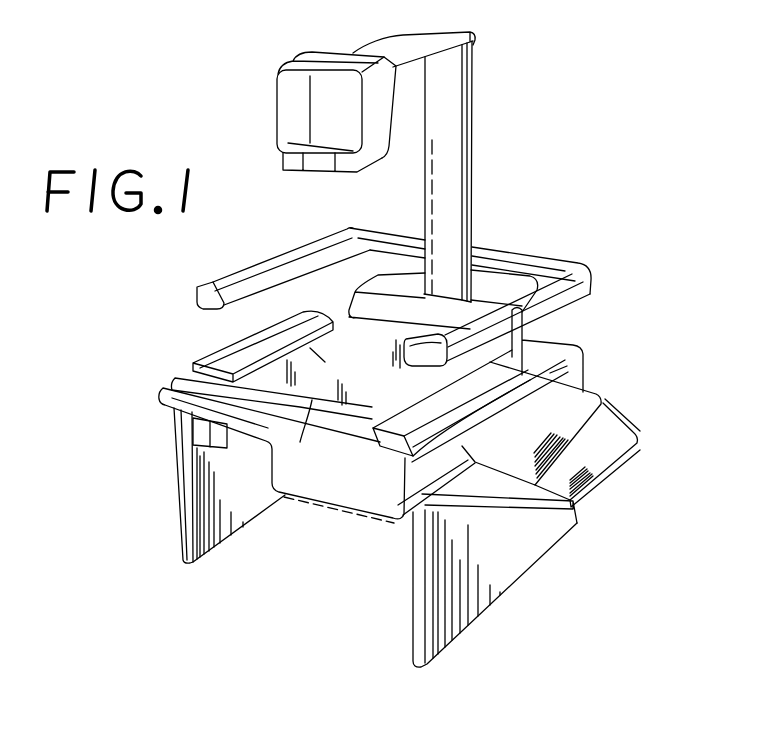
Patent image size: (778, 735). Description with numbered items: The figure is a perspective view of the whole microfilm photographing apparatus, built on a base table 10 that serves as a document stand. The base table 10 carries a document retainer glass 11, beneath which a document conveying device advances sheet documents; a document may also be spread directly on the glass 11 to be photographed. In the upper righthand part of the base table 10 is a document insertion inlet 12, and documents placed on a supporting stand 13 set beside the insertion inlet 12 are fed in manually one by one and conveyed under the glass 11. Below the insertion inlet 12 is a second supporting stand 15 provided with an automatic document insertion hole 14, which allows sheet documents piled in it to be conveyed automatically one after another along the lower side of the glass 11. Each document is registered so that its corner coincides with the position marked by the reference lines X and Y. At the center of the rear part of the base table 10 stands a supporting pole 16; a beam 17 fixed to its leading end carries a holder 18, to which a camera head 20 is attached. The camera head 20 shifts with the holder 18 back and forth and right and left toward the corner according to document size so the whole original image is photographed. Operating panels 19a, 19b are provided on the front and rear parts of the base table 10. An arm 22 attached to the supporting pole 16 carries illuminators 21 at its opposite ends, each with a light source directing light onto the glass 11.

The base table 10 is at (171, 376).
The document retainer glass 11 is at (363, 400).
The document insertion inlet 12 is at (530, 370).
The supporting stand 13 is at (565, 396).
The automatic document insertion hole 14 is at (603, 413).
The supporting stand 15 is at (594, 478).
The supporting pole 16 is at (467, 181).
The beam 17 is at (428, 40).
The holder 18 is at (390, 113).
The operating panel 19a is at (383, 440).
The operating panel 19b is at (358, 301).
The camera head 20 is at (287, 108).
The illuminators 21 is at (265, 268).
The arm 22 is at (388, 232).